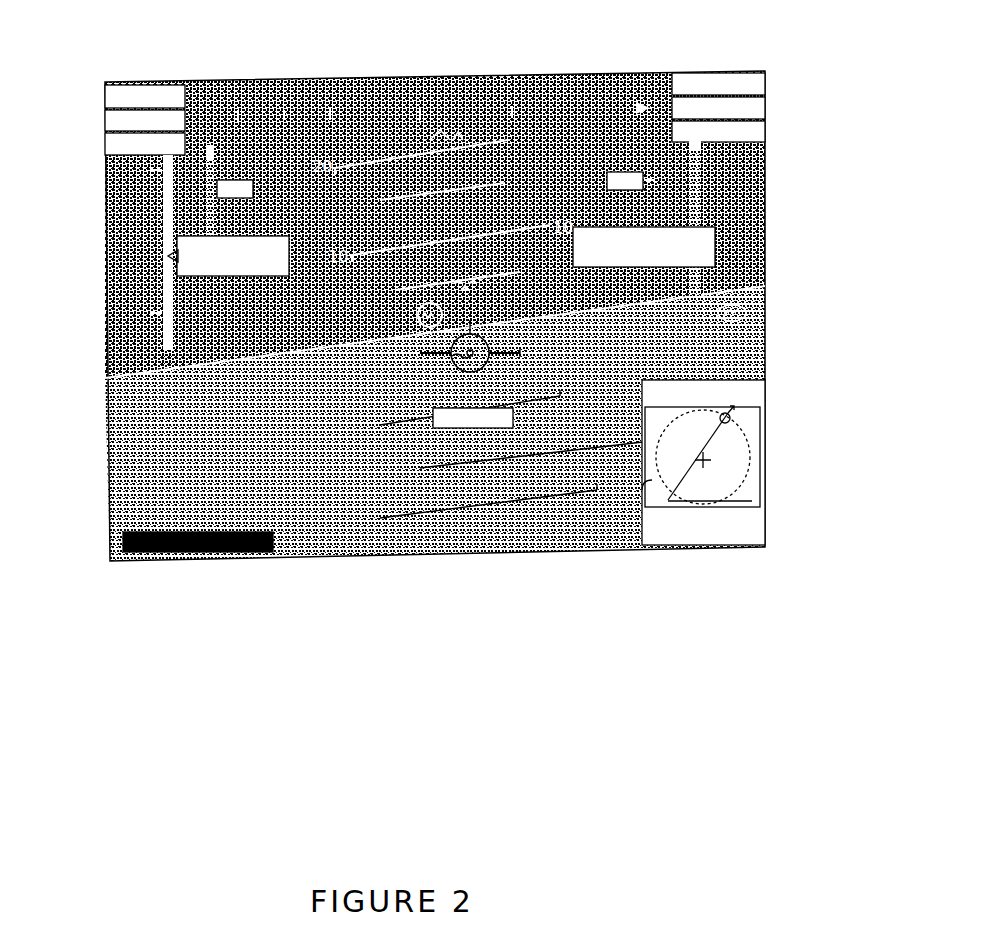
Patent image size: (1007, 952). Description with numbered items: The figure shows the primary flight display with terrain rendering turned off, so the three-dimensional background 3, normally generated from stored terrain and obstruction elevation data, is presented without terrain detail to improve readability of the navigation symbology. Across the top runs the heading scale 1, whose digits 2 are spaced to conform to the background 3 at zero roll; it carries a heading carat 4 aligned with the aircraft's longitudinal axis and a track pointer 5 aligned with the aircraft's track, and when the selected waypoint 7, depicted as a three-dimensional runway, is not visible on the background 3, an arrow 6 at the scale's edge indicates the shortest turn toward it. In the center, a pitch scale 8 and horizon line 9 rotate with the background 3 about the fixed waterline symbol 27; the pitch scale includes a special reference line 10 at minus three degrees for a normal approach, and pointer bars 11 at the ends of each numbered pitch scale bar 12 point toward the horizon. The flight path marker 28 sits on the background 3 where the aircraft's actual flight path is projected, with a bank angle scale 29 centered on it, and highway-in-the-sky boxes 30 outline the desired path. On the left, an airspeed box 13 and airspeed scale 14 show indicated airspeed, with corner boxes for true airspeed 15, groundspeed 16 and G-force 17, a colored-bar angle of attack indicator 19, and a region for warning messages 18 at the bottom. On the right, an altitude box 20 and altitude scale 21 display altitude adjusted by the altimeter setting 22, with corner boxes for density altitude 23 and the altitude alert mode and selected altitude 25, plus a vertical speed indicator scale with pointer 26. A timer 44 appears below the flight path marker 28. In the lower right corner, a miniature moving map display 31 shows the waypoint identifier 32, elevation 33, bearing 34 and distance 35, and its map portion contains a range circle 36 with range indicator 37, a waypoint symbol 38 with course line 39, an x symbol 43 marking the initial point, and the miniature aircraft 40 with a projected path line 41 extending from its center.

The heading scale 1 is at (290, 78).
The digits 2 is at (363, 78).
The primary flight display background 3 is at (605, 532).
The heading carat 4 is at (473, 75).
The track pointer 5 is at (525, 75).
The arrow 6 is at (665, 72).
The selected waypoint 7 is at (745, 313).
The pitch scale 8 is at (480, 508).
The horizon line 9 is at (105, 342).
The special reference line 10 is at (425, 360).
The pointer bars 11 is at (378, 520).
The numbered pitch scale bar 12 is at (400, 520).
The airspeed box 13 is at (183, 250).
The airspeed scale 14 is at (105, 286).
The true airspeed 15 is at (105, 92).
The groundspeed 16 is at (105, 121).
The normal acceleration or G-force 17 is at (105, 146).
The region for warning messages 18 is at (127, 552).
The angle of attack indicator 19 is at (213, 100).
The altitude box 20 is at (765, 217).
The altitude scale 21 is at (765, 264).
The altimeter setting 22 is at (755, 87).
The density altitude 23 is at (757, 110).
The altitude alert mode and selected altitude 25 is at (765, 130).
The vertical speed indicator scale with pointer 26 is at (765, 178).
The waterline symbol 27 is at (306, 350).
The flight path marker 28 is at (490, 367).
The bank angle scale 29 is at (545, 325).
The highway-in-the-sky boxes 30 is at (262, 378).
The miniature moving map display 31 is at (752, 537).
The identifier 32 is at (650, 392).
The elevation 33 is at (755, 394).
The bearing 34 is at (753, 518).
The distance 35 is at (695, 540).
The range circle 36 is at (752, 478).
The range indicator 37 is at (700, 500).
The waypoint symbol 38 is at (733, 420).
The course line 39 is at (713, 438).
The miniature aircraft 40 is at (711, 462).
The projected path line 41 is at (730, 452).
The x symbol 43 is at (647, 520).
The timer 44 is at (482, 428).